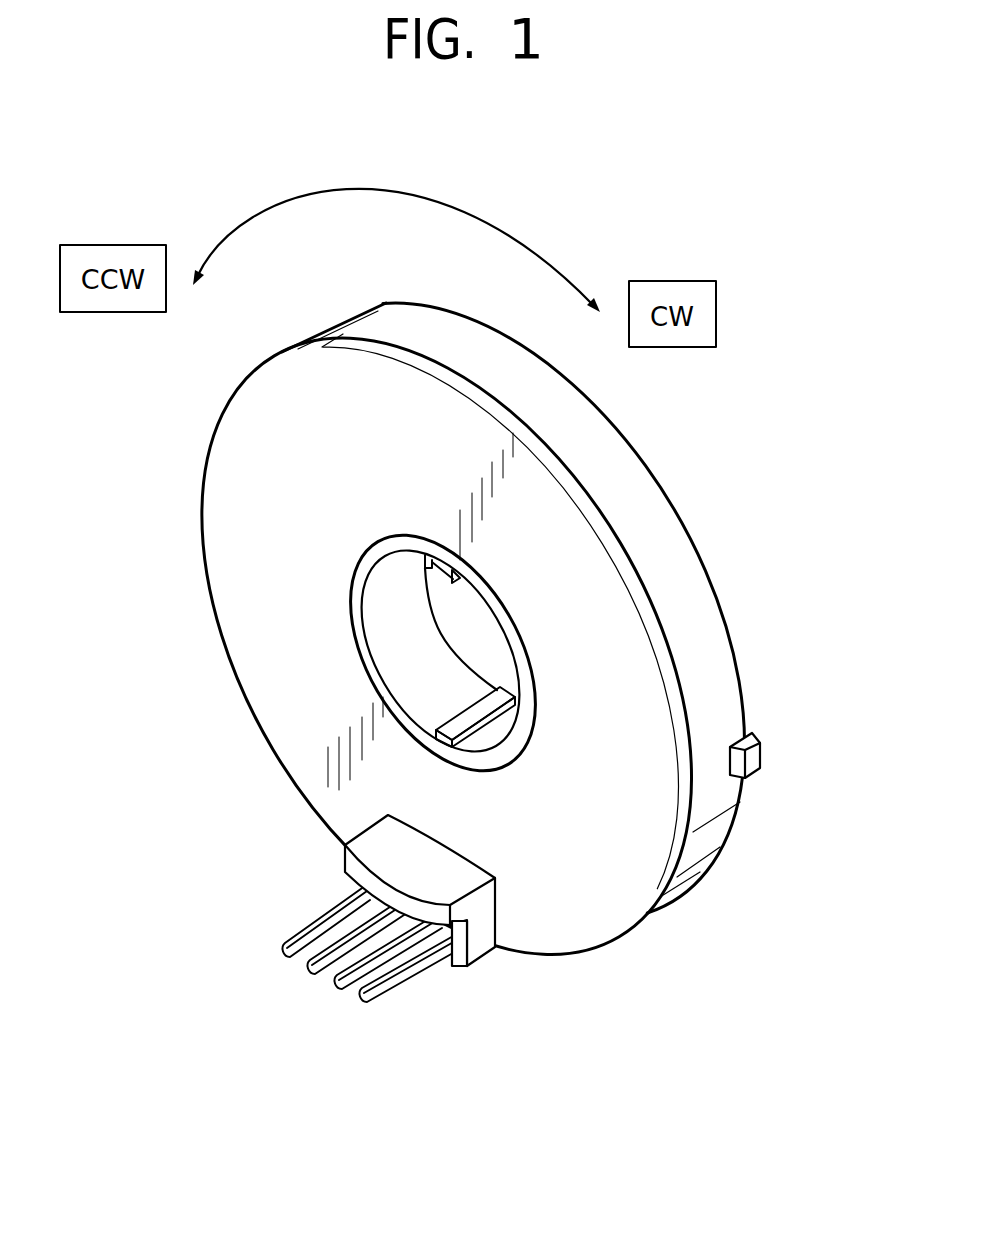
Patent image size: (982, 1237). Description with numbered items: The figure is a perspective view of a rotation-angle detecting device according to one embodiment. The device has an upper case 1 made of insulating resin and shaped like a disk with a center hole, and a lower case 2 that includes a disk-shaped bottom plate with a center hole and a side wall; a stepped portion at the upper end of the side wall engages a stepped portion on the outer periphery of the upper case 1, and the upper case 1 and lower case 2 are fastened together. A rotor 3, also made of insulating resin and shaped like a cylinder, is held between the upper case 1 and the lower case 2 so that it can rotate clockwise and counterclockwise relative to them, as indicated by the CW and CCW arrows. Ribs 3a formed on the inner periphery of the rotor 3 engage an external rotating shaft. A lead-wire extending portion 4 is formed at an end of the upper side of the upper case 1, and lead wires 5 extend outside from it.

The upper case 1 is at (622, 652).
The lower case 2 is at (700, 640).
The rotor 3 is at (497, 622).
The ribs 3a is at (431, 572).
The lead-wire extending portion 4 is at (483, 947).
The lead wires 5 is at (310, 935).